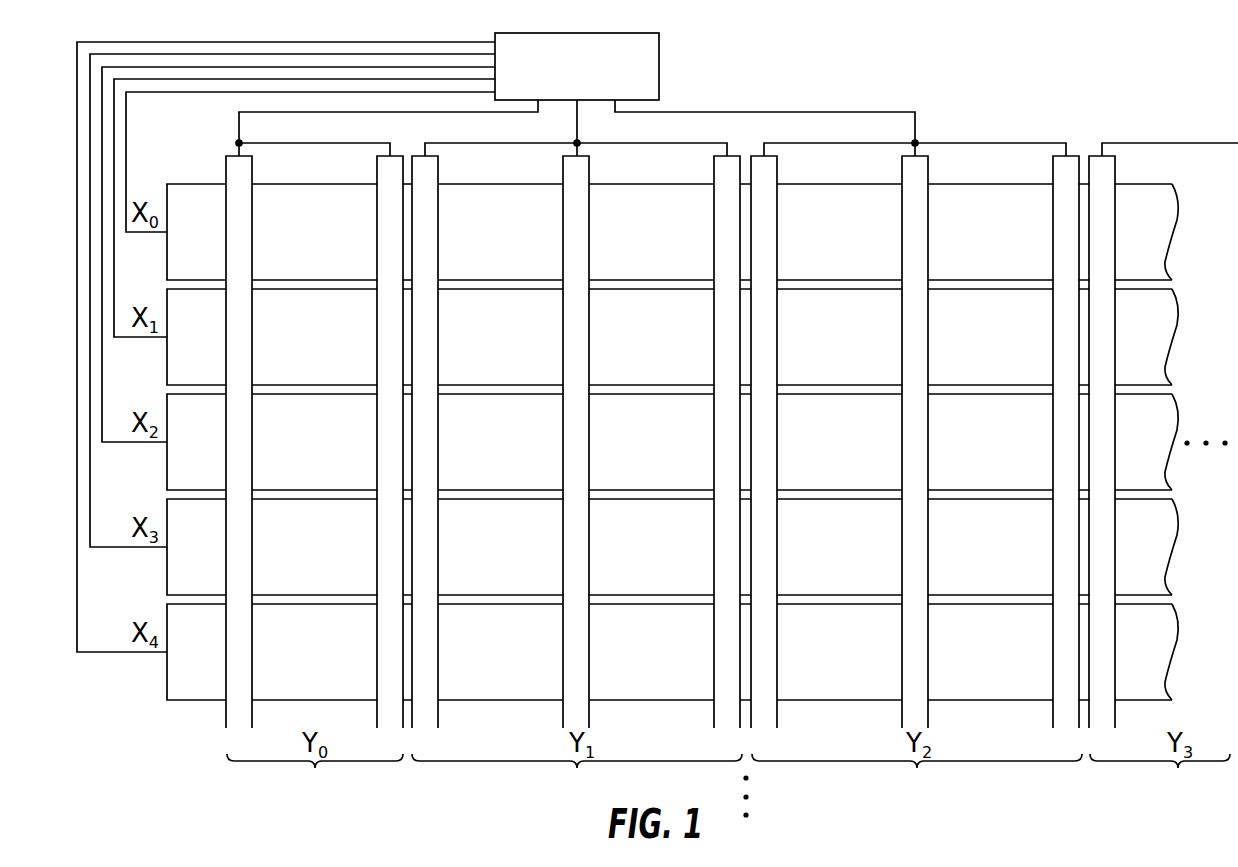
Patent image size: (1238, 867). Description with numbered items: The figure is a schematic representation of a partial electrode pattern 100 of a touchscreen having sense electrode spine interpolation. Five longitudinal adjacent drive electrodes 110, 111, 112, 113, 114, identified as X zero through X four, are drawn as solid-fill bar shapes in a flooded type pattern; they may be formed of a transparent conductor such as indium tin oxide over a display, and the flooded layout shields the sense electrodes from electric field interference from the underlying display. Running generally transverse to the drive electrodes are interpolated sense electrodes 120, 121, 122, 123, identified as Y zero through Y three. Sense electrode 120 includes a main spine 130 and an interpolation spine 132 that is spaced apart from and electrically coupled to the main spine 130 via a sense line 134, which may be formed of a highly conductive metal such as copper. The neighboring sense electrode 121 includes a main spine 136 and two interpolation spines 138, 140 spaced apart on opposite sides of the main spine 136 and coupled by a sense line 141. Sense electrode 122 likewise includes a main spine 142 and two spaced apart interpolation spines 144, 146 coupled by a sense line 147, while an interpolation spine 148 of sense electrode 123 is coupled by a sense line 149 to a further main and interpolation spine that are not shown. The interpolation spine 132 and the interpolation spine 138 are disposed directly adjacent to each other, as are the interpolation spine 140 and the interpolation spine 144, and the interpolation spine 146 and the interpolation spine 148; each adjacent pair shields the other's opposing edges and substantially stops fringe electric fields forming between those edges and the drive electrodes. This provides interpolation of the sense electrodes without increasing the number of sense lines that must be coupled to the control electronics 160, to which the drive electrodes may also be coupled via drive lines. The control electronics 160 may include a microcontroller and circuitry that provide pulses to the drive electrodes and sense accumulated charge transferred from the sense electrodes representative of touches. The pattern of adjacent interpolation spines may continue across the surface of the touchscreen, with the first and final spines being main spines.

The partial electrode pattern 100 is at (1127, 47).
The drive electrode 110 is at (203, 184).
The drive electrode 111 is at (315, 289).
The drive electrode 112 is at (502, 394).
The drive electrode 113 is at (653, 499).
The drive electrode 114 is at (838, 604).
The sense electrode 120 is at (315, 776).
The sense electrode 121 is at (577, 776).
The sense electrode 122 is at (917, 776).
The sense electrode 123 is at (1160, 776).
The main spine 130 is at (252, 690).
The interpolation spine 132 is at (377, 690).
The sense line 134 is at (237, 131).
The main spine 136 is at (589, 690).
The interpolation spine 138 is at (438, 690).
The interpolation spine 140 is at (714, 690).
The sense line 141 is at (655, 143).
The main spine 142 is at (928, 690).
The interpolation spine 144 is at (777, 690).
The interpolation spine 146 is at (1053, 690).
The sense line 147 is at (993, 143).
The interpolation spine 148 is at (1115, 690).
The sense line 149 is at (1168, 143).
The control electronics 160 is at (578, 33).